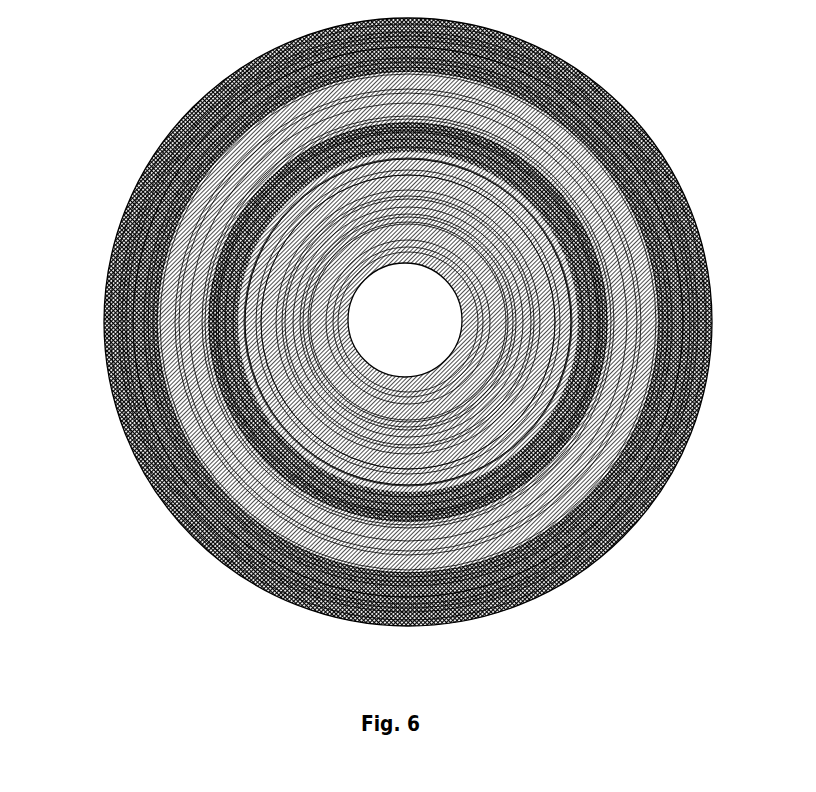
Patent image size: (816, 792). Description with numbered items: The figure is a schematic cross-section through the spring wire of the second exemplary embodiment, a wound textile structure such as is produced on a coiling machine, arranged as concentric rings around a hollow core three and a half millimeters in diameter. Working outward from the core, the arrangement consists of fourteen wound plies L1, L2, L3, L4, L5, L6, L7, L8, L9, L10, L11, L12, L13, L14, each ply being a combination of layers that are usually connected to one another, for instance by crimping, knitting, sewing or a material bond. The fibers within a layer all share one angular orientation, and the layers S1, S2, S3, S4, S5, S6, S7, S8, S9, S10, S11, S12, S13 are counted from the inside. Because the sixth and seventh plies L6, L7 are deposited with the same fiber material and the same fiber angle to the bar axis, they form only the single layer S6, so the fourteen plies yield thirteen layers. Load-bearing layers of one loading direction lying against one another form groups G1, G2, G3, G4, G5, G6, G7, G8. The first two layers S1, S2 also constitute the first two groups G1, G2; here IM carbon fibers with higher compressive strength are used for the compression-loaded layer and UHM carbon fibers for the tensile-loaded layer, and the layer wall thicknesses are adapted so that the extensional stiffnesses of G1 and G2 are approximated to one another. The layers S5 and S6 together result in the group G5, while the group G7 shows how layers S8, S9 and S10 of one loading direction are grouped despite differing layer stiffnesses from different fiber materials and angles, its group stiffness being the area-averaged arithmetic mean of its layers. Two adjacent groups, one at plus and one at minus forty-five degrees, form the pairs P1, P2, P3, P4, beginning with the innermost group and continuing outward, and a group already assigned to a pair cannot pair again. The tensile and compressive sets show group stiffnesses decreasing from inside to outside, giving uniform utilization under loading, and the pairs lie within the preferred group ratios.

The first group G1 is at (390, 240).
The second group G2 is at (345, 233).
The third group G3 is at (300, 238).
The fourth group G4 is at (250, 250).
The fifth group G5 is at (217, 256).
The sixth group G6 is at (205, 274).
The seventh group G7 is at (167, 298).
The eighth group G8 is at (100, 330).
The first pair P1 is at (300, 318).
The second pair P2 is at (265, 372).
The third pair P3 is at (230, 430).
The fourth pair P4 is at (235, 540).
The first layer S1 is at (430, 238).
The second layer S2 is at (470, 232).
The third layer S3 is at (505, 235).
The fourth layer S4 is at (530, 235).
The fifth layer S5 is at (548, 245).
The sixth layer S6 is at (565, 255).
The seventh layer S7 is at (585, 270).
The eighth layer S8 is at (593, 285).
The ninth layer S9 is at (618, 330).
The tenth layer S10 is at (648, 353).
The eleventh layer S11 is at (652, 380).
The twelfth layer S12 is at (670, 397).
The thirteenth layer S13 is at (675, 430).
The first ply L1 is at (340, 350).
The second ply L2 is at (350, 407).
The third ply L3 is at (368, 425).
The fourth ply L4 is at (392, 437).
The fifth ply L5 is at (420, 460).
The sixth ply L6 is at (440, 473).
The seventh ply L7 is at (460, 487).
The eighth ply L8 is at (480, 500).
The ninth ply L9 is at (500, 520).
The tenth ply L10 is at (512, 535).
The eleventh ply L11 is at (528, 535).
The twelfth ply L12 is at (552, 530).
The thirteenth ply L13 is at (570, 530).
The fourteenth ply L14 is at (590, 527).